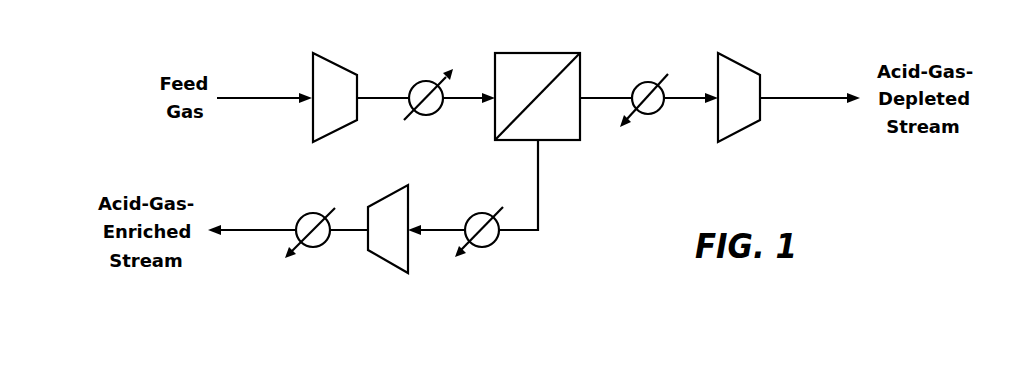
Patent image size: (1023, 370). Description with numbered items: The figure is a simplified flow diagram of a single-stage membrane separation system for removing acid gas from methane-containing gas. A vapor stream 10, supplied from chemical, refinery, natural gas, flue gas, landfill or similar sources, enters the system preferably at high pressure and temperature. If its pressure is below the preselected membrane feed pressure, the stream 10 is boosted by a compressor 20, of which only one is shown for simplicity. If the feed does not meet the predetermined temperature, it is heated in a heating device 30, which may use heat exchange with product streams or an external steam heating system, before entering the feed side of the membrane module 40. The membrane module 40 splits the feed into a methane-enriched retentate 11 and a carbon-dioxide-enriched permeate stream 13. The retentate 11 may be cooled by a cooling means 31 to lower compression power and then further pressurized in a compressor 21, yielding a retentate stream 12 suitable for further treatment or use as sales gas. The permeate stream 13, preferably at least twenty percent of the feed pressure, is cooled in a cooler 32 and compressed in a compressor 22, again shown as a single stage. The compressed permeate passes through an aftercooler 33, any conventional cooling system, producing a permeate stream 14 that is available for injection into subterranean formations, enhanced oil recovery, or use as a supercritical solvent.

The vapor stream 10 is at (275, 97).
The compressor 20 is at (335, 63).
The heating device 30 is at (431, 115).
The membrane module 40 is at (540, 53).
The retentate 11 is at (597, 97).
The cooling means 31 is at (641, 82).
The compressor 21 is at (741, 64).
The retentate stream 12 is at (791, 97).
The permeate stream 13 is at (540, 189).
The cooler 32 is at (470, 213).
The compressor 22 is at (390, 263).
The aftercooler 33 is at (306, 213).
The permeate stream 14 is at (275, 229).